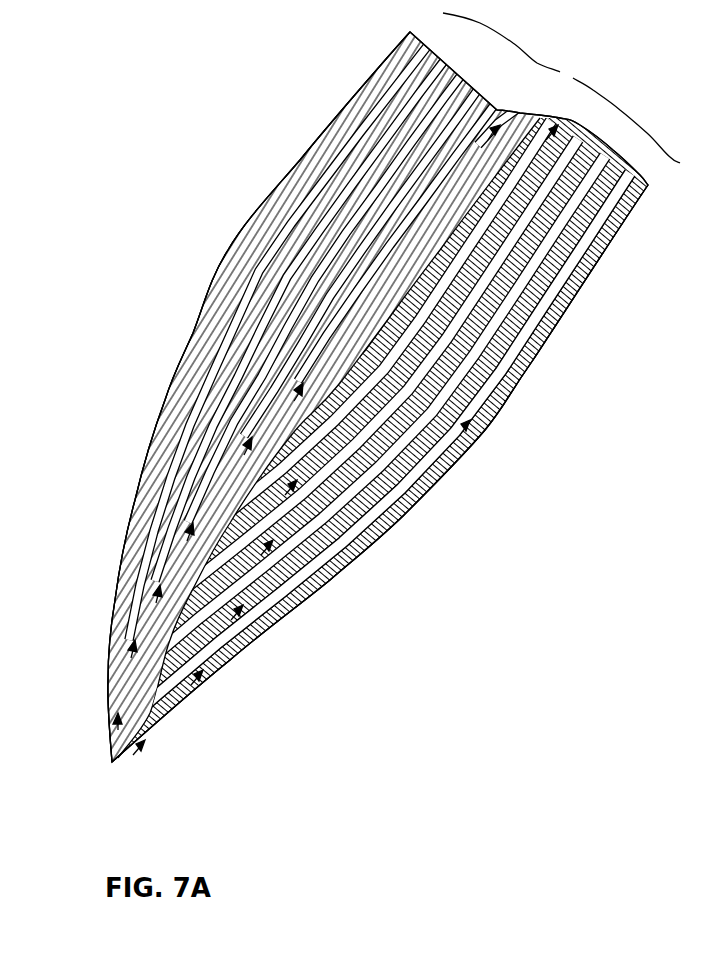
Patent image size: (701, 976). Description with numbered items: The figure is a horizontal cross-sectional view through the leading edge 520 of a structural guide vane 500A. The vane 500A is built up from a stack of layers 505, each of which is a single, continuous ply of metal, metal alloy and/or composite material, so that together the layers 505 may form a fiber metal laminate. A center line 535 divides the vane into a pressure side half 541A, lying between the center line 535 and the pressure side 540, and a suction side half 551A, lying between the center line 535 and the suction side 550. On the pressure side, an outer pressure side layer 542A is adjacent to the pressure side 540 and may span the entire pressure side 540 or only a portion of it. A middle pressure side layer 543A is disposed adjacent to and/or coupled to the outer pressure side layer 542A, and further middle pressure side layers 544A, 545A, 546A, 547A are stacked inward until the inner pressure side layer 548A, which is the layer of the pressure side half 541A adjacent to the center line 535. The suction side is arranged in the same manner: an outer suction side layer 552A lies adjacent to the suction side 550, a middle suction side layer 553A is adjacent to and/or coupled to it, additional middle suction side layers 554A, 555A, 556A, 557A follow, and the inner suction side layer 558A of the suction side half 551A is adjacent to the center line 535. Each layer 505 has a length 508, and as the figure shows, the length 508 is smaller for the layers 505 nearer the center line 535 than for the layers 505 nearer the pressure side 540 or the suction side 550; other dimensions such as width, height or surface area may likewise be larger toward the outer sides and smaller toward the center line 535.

The vane 500A is at (156, 187).
The layer 505 is at (561, 88).
The length 508 is at (405, 400).
The leading edge 520 is at (128, 794).
The center line 535 is at (546, 340).
The pressure side 540 is at (557, 373).
The pressure side half 541A is at (484, 430).
The outer pressure side layer 542A is at (145, 745).
The middle pressure side layer 543A is at (203, 675).
The middle pressure side layer 544A is at (243, 612).
The middle pressure side layer 545A is at (273, 548).
The middle pressure side layer 546A is at (298, 490).
The middle pressure side layer 547A is at (490, 403).
The inner pressure side layer 548A is at (590, 280).
The suction side 550 is at (292, 178).
The suction side half 551A is at (190, 333).
The outer suction side layer 552A is at (115, 716).
The middle suction side layer 553A is at (133, 643).
The middle suction side layer 554A is at (158, 588).
The middle suction side layer 555A is at (190, 526).
The middle suction side layer 556A is at (250, 440).
The middle suction side layer 557A is at (300, 386).
The inner suction side layer 558A is at (493, 137).